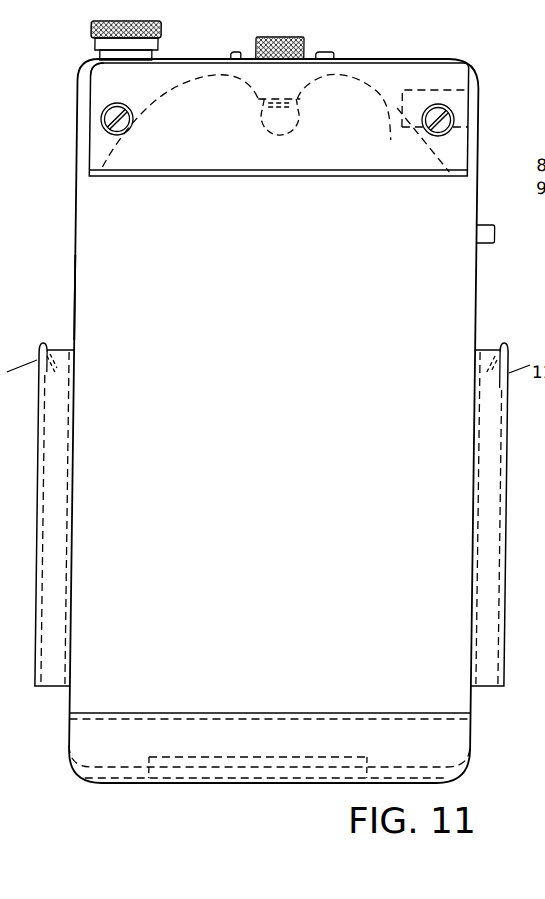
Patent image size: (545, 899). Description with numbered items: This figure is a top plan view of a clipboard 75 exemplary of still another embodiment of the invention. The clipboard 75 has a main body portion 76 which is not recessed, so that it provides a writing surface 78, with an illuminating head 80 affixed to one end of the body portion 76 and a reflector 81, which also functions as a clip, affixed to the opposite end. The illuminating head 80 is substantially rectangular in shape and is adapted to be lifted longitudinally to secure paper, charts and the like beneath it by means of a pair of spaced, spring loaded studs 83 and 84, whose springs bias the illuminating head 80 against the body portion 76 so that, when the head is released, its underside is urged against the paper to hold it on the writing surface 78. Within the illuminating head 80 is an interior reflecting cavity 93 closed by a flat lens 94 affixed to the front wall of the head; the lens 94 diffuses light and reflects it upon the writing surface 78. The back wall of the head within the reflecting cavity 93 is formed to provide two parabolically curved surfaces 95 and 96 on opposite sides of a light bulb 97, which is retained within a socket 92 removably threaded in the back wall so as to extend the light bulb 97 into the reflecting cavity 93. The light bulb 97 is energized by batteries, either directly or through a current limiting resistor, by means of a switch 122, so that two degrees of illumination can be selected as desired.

The clipboard 75 is at (70, 248).
The main body portion 76 is at (77, 275).
The writing surface 78 is at (103, 295).
The illuminating head 80 is at (104, 84).
The reflector 81 is at (93, 733).
The spring loaded stud 83 is at (103, 121).
The spring loaded stud 84 is at (452, 127).
The socket 92 is at (305, 45).
The reflecting cavity 93 is at (182, 160).
The lens 94 is at (310, 178).
The parabolically curved surface 95 is at (143, 127).
The parabolically curved surface 96 is at (392, 118).
The light bulb 97 is at (273, 137).
The switch 122 is at (482, 244).